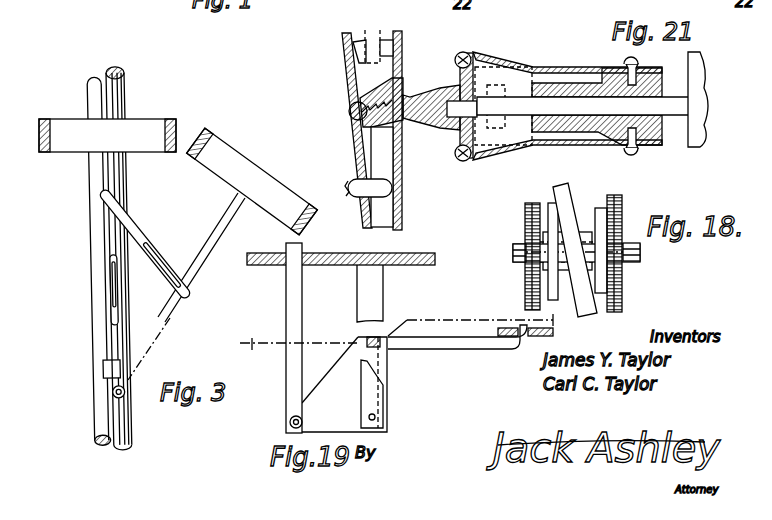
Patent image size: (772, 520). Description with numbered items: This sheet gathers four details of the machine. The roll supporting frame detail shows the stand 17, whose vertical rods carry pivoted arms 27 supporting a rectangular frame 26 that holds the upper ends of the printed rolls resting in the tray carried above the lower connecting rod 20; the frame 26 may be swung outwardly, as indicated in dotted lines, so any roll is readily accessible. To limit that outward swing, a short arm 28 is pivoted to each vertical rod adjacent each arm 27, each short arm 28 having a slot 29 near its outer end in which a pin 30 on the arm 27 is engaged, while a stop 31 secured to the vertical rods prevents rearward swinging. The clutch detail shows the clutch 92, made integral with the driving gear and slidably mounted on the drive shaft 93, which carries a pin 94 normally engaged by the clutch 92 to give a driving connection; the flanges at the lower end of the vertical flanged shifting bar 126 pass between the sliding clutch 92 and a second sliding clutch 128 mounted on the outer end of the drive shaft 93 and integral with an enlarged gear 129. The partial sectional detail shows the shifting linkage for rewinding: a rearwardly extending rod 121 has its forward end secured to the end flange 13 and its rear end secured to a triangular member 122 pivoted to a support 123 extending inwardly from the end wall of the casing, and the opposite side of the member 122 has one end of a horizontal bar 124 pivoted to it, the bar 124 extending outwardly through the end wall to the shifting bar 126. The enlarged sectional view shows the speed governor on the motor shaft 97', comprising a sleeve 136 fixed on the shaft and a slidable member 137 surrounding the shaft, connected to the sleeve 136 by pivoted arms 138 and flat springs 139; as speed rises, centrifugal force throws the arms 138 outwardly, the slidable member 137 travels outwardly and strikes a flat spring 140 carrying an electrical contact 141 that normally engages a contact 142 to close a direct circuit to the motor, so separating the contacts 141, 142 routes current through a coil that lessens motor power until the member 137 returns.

In FIG. 3, the stand 17 is at (98, 92).
In FIG. 3, the rectangular frame 26 is at (150, 130).
In FIG. 3, the arms 27 is at (105, 172).
In FIG. 3, the short arm 28 is at (133, 222).
In FIG. 3, the slot 29 is at (158, 256).
In FIG. 3, the pin 30 is at (110, 262).
In FIG. 3, the stop 31 is at (97, 370).
In FIG. 19, the lower connecting rod 20 is at (403, 334).
In FIG. 19, the end flange 13 is at (540, 338).
In FIG. 19, the rearwardly extending rod 121 is at (455, 349).
In FIG. 19, the triangular member 122 is at (328, 403).
In FIG. 19, the support 123 is at (370, 293).
In FIG. 19, the horizontal bar 124 is at (292, 300).
In FIG. 21, the sleeve 136 is at (650, 68).
In FIG. 21, the slidable member 137 is at (432, 118).
In FIG. 21, the pivoted arms 138 is at (462, 77).
In FIG. 21, the flat springs 139 is at (578, 66).
In FIG. 21, the flat spring 140 is at (347, 50).
In FIG. 21, the electrical contact 141 is at (360, 42).
In FIG. 21, the contact 142 is at (388, 40).
In FIG. 21, the motor shaft 97' is at (588, 98).
In FIG. 18, the clutch 92 is at (535, 285).
In FIG. 18, the drive shaft 93 is at (592, 288).
In FIG. 18, the pin 94 is at (572, 245).
In FIG. 18, the vertical flanged shifting bar 126 is at (570, 190).
In FIG. 18, the second sliding clutch 128 is at (618, 267).
In FIG. 18, the enlarged gear 129 is at (618, 305).